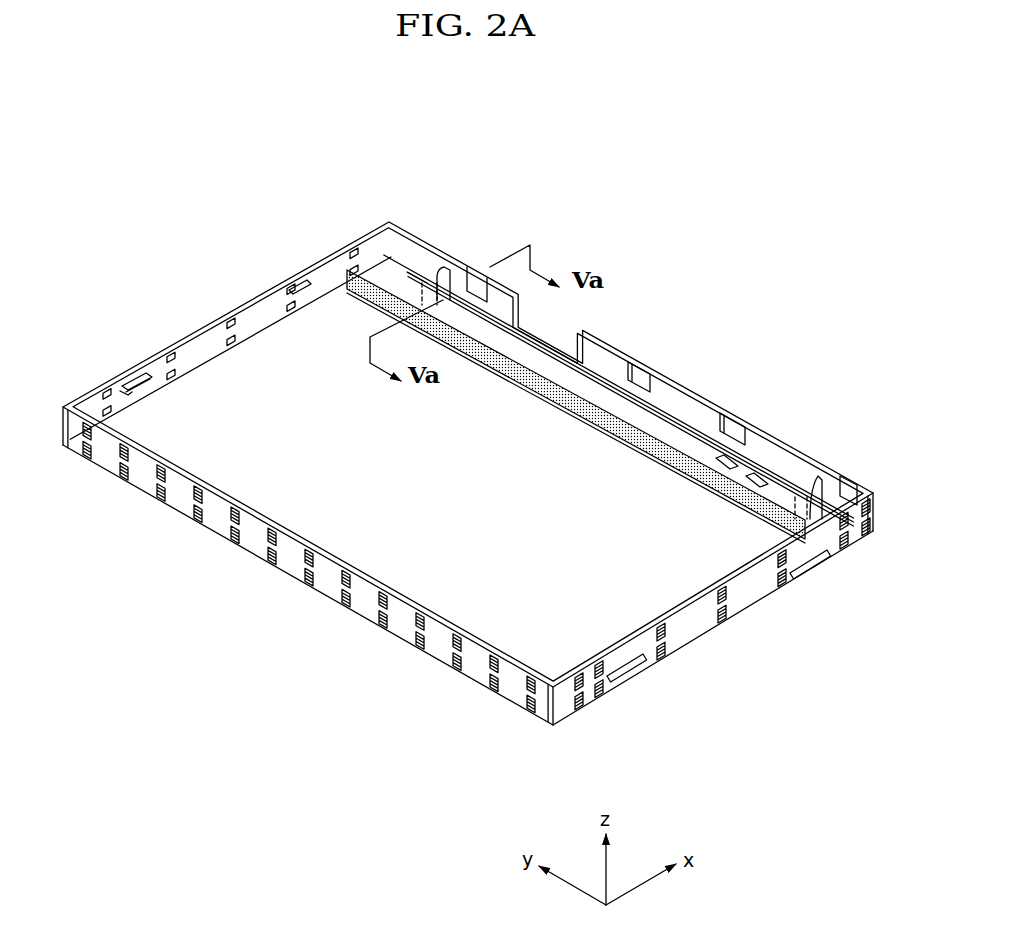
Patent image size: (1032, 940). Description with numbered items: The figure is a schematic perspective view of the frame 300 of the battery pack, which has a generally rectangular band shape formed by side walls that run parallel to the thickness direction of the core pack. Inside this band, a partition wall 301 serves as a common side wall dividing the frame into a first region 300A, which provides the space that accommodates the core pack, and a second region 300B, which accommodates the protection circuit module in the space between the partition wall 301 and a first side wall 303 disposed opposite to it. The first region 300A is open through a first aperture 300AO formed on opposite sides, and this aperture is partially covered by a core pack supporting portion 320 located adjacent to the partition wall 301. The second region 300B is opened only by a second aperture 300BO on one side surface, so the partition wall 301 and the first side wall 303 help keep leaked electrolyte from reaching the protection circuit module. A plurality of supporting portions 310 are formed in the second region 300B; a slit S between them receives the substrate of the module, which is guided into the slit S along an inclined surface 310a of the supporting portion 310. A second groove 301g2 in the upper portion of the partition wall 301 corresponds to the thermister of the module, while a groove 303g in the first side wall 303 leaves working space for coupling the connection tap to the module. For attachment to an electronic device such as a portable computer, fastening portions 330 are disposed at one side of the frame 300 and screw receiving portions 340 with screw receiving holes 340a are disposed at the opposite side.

The frame 300 is at (637, 211).
The first region 300A is at (521, 480).
The second region 300B is at (674, 408).
The first aperture 300AO is at (596, 632).
The second aperture 300BO is at (832, 498).
The partition wall 301 is at (493, 336).
The second groove 301g2 is at (757, 484).
The first side wall 303 is at (753, 447).
The groove 303g is at (855, 496).
The supporting portion 310 is at (446, 279).
The inclined surface 310a is at (435, 276).
The slit S is at (436, 278).
The core pack supporting portion 320 is at (517, 379).
The fastening portion 330 is at (632, 673).
The screw receiving portion 340 is at (141, 380).
The screw receiving hole 340a is at (128, 386).